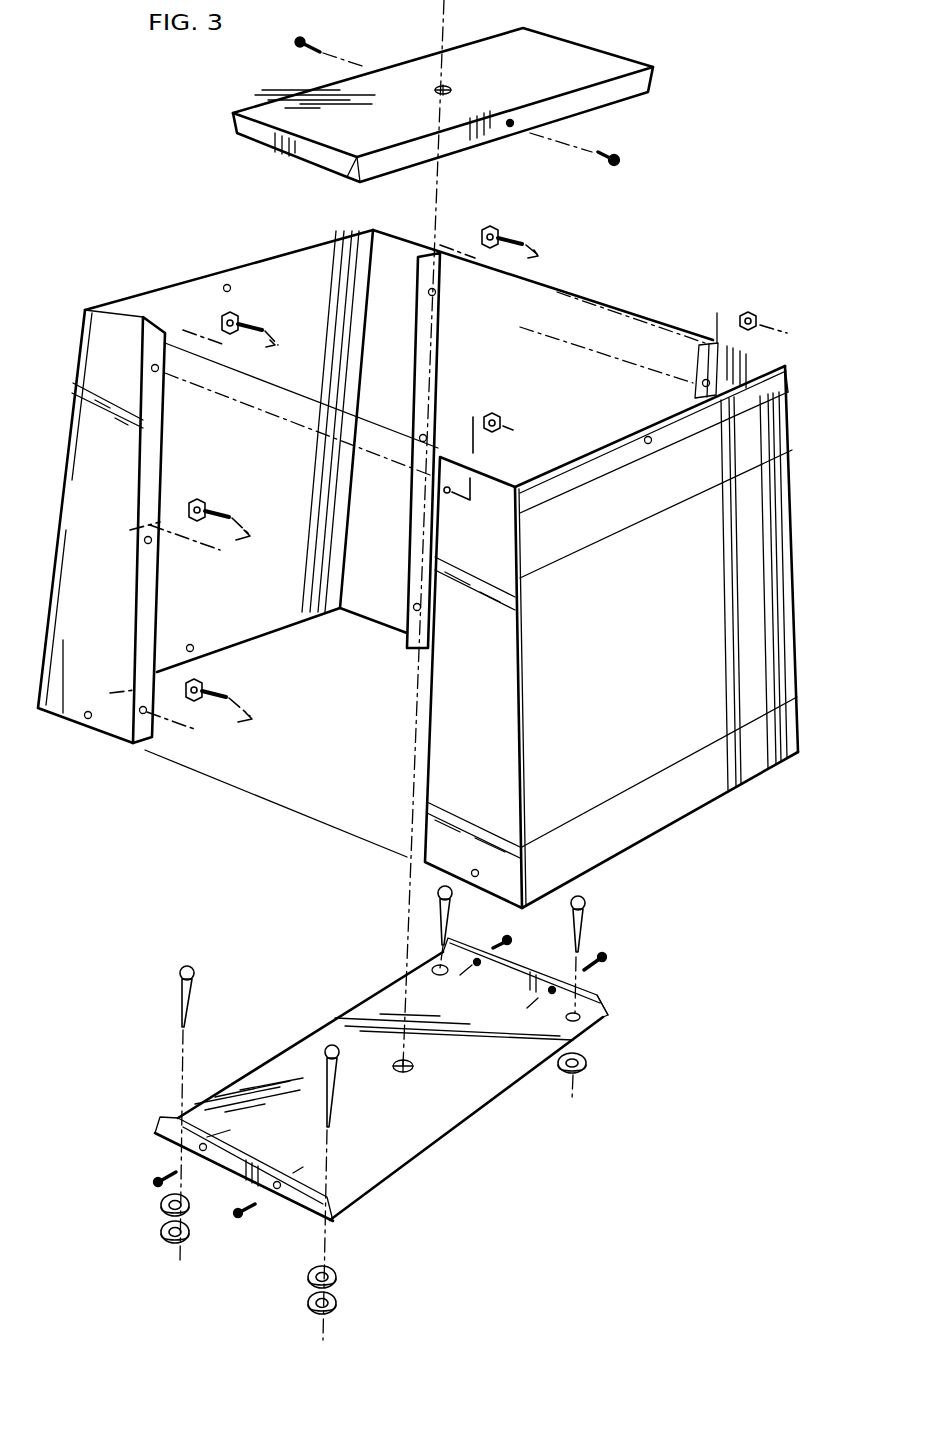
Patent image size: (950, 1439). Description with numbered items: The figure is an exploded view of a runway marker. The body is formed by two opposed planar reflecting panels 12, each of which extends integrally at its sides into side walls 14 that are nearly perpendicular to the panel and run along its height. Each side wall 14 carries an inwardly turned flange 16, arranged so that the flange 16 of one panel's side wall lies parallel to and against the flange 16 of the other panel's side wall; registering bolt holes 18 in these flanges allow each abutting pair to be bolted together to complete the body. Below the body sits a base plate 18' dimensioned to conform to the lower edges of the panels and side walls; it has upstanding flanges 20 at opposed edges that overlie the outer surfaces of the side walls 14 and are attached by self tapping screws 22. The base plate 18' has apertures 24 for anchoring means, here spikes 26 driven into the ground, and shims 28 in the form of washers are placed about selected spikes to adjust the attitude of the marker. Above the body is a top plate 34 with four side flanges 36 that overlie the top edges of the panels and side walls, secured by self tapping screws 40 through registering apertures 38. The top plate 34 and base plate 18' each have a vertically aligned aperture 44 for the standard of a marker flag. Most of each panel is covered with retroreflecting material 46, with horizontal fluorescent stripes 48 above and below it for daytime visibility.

The reflecting panel 12 is at (244, 467).
The side wall 14 is at (479, 641).
The inwardly turned flange 16 is at (157, 433).
The bolt hole 18 is at (316, 478).
The base plate 18' is at (379, 1086).
The upstanding flange 20 is at (590, 1002).
The self tapping screw 22 is at (278, 1185).
The aperture 24 is at (605, 1018).
The spike 26 is at (587, 923).
The shim 28 is at (161, 1232).
The top plate 34 is at (581, 82).
The side flange 36 is at (240, 124).
The aperture 38 is at (510, 123).
The self tapping screw 40 is at (618, 165).
The aperture 44 is at (445, 89).
The retroreflecting material 46 is at (63, 447).
The fluorescent stripe 48 is at (701, 474).